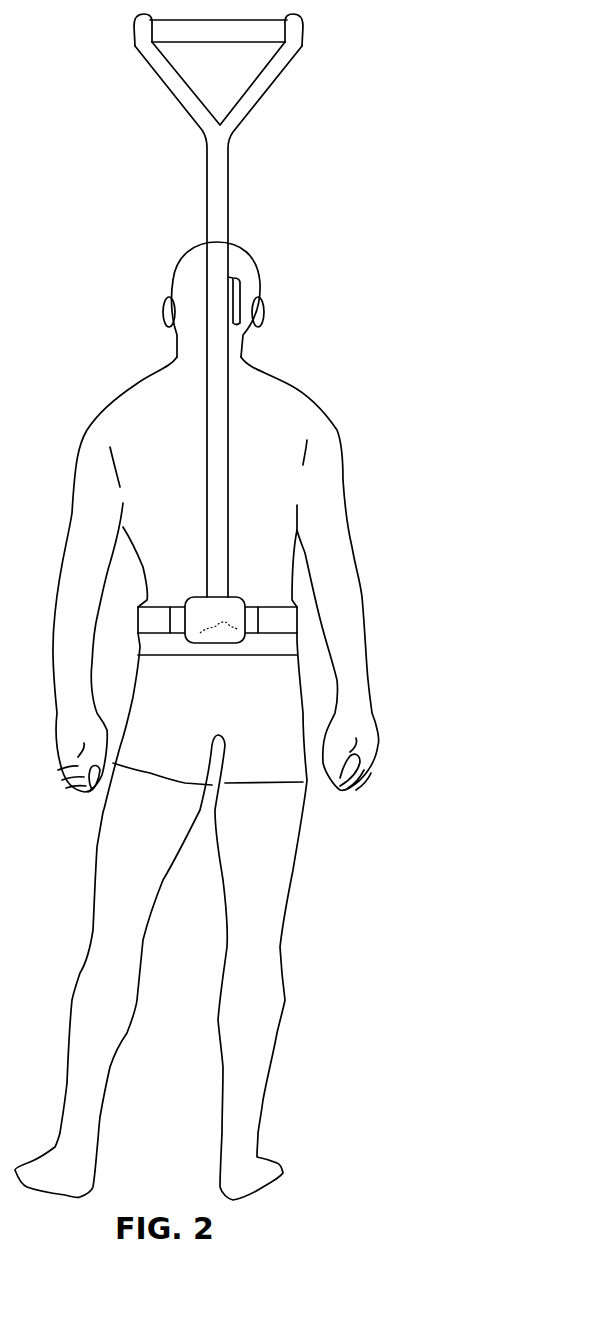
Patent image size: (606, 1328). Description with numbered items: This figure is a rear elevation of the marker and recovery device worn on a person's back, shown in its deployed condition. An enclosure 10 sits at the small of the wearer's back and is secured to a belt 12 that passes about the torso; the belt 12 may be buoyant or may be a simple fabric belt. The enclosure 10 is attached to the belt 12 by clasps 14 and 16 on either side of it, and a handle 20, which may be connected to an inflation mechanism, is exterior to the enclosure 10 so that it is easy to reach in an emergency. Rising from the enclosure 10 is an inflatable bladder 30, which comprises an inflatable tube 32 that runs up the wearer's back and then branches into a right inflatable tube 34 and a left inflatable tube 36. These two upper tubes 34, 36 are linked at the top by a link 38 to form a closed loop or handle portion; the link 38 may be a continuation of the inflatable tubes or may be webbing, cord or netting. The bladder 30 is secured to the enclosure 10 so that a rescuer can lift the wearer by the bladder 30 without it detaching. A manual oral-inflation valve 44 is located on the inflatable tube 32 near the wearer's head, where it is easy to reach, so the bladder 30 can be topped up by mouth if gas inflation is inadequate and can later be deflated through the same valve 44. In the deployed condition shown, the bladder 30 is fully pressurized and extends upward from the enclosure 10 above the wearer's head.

The enclosure 10 is at (224, 628).
The belt 12 is at (153, 606).
The clasp 14 is at (216, 628).
The clasp 16 is at (255, 625).
The handle 20 is at (228, 634).
The inflatable bladder 30 is at (217, 304).
The inflatable tube 32 is at (213, 494).
The right inflatable tube 34 is at (293, 50).
The left inflatable tube 36 is at (142, 50).
The link 38 is at (237, 36).
The manual oral-inflation valve 44 is at (226, 288).